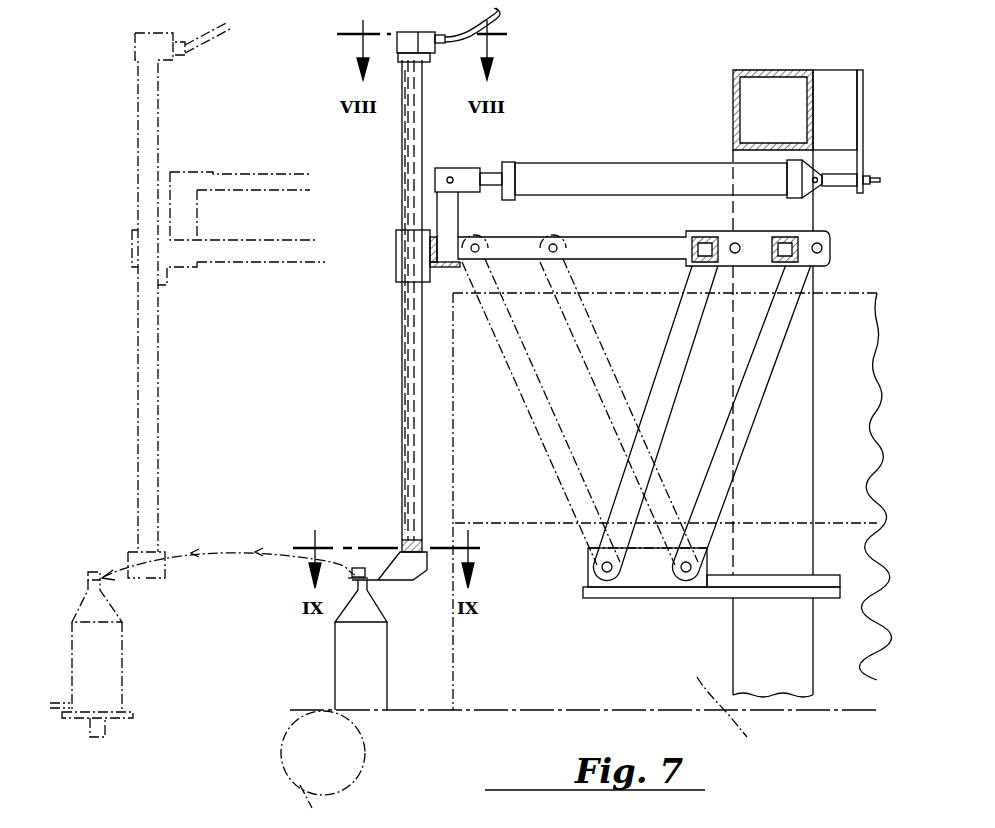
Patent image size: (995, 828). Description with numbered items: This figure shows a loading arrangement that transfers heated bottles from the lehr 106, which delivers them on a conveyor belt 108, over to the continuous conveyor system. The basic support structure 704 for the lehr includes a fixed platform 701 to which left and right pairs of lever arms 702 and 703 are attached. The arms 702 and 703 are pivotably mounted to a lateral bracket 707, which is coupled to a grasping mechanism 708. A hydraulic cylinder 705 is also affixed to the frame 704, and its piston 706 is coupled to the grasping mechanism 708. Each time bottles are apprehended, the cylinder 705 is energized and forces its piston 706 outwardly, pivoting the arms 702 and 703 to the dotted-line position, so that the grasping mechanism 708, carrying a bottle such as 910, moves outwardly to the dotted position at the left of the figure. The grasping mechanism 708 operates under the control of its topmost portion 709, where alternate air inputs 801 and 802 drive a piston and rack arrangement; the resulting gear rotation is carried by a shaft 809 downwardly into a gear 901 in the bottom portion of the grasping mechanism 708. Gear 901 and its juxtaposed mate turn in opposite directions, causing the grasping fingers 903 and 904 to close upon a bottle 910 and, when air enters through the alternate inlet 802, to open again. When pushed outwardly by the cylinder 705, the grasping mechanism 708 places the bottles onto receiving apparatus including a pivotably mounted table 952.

The fixed platform 701 is at (650, 592).
The lever arms 702 is at (690, 348).
The lever arms 703 is at (755, 428).
The support structure 704 is at (770, 70).
The hydraulic cylinder 705 is at (613, 175).
The piston 706 is at (492, 173).
The lateral bracket 707 is at (597, 243).
The grasping mechanism 708 is at (405, 417).
The topmost portion 709 is at (412, 35).
The air input 801 is at (500, 17).
The air input 802 is at (543, 17).
The shaft 809 is at (410, 182).
The gear 901 is at (403, 540).
The grasping finger 904 is at (390, 572).
The bottle 910 is at (382, 642).
The table 952 is at (120, 717).
The conveyor belt 108 is at (520, 710).
The lehr 106 is at (740, 713).
The grasping finger 903 is at (262, 769).